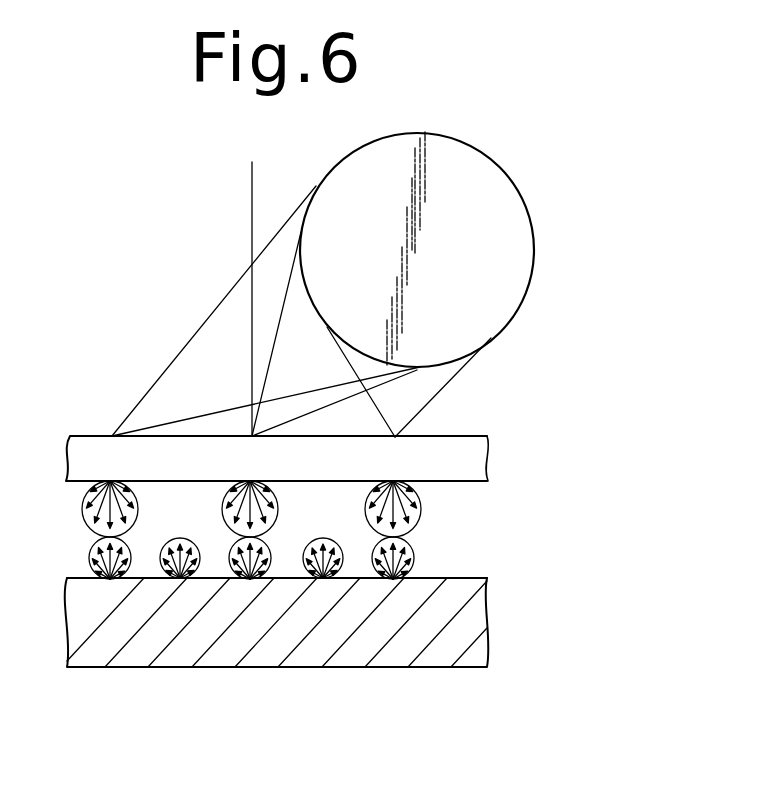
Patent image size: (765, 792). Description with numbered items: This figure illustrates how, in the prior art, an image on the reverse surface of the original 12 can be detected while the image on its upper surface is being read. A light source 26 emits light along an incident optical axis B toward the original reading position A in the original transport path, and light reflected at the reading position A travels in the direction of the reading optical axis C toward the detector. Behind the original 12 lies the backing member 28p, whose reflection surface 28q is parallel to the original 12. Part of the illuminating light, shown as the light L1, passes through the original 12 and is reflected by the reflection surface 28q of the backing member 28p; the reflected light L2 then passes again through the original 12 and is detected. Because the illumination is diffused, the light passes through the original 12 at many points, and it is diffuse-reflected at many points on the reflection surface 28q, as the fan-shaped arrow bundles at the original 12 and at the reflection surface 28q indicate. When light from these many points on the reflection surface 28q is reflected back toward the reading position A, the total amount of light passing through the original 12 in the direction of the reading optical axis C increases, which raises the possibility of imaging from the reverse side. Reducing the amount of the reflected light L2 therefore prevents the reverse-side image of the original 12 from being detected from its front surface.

The light source 26 is at (515, 202).
The original 12 is at (465, 448).
The reflection surface 28q is at (468, 580).
The backing member 28p is at (385, 653).
The original reading position A is at (252, 436).
The incident optical axis B is at (395, 381).
The reading optical axis C is at (252, 211).
The light passing through the original L1 is at (275, 515).
The reflected light L2 is at (250, 537).